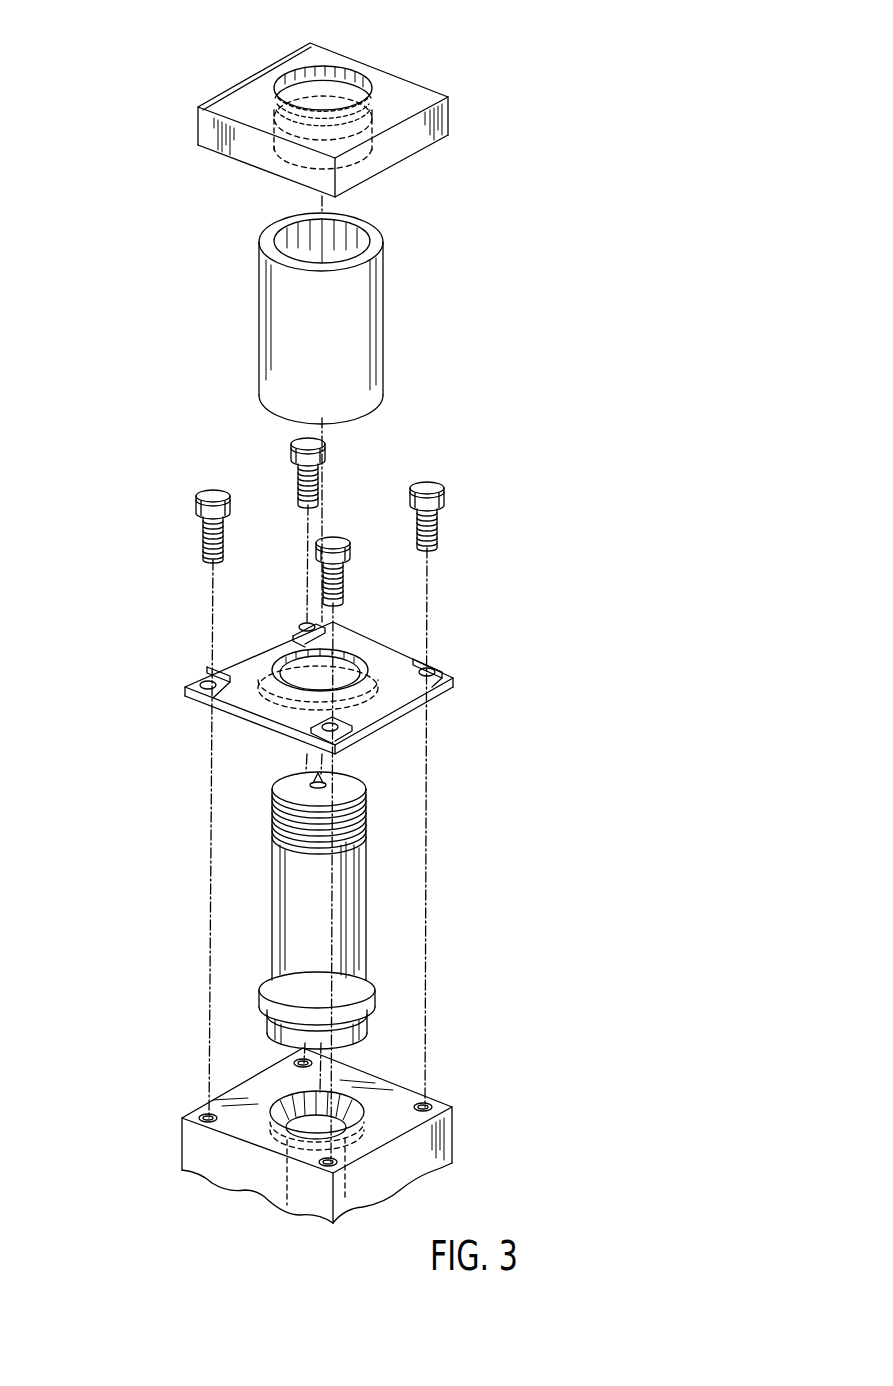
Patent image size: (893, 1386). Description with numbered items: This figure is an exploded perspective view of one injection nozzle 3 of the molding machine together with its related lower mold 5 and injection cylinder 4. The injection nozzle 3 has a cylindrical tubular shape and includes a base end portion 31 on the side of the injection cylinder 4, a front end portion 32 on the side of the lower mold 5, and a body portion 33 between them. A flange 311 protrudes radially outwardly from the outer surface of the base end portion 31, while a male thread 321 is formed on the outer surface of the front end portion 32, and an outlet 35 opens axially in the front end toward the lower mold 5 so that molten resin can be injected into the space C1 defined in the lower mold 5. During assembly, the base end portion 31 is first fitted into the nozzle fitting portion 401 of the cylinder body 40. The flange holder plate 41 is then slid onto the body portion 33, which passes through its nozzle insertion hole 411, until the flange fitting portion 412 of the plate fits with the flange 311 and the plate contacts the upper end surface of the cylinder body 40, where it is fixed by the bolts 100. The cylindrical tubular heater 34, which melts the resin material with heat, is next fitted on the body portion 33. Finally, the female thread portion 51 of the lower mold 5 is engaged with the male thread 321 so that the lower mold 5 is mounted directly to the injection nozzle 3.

The injection nozzle 3 is at (388, 898).
The base end portion 31 is at (373, 1009).
The flange 311 is at (376, 997).
The front end portion 32 is at (376, 800).
The male thread 321 is at (360, 832).
The body portion 33 is at (340, 898).
The cylindrical tubular heater 34 is at (355, 305).
The outlet 35 is at (327, 783).
The injection cylinder 4 is at (133, 800).
The cylinder body 40 is at (287, 1123).
The nozzle fitting portion 401 is at (275, 1110).
The flange holder plate 41 is at (296, 712).
The nozzle insertion hole 411 is at (287, 653).
The flange fitting portion 412 is at (280, 708).
The lower mold 5 is at (329, 98).
The female thread portion 51 is at (354, 138).
The bolts 100 is at (213, 490).
The space C1 is at (324, 88).